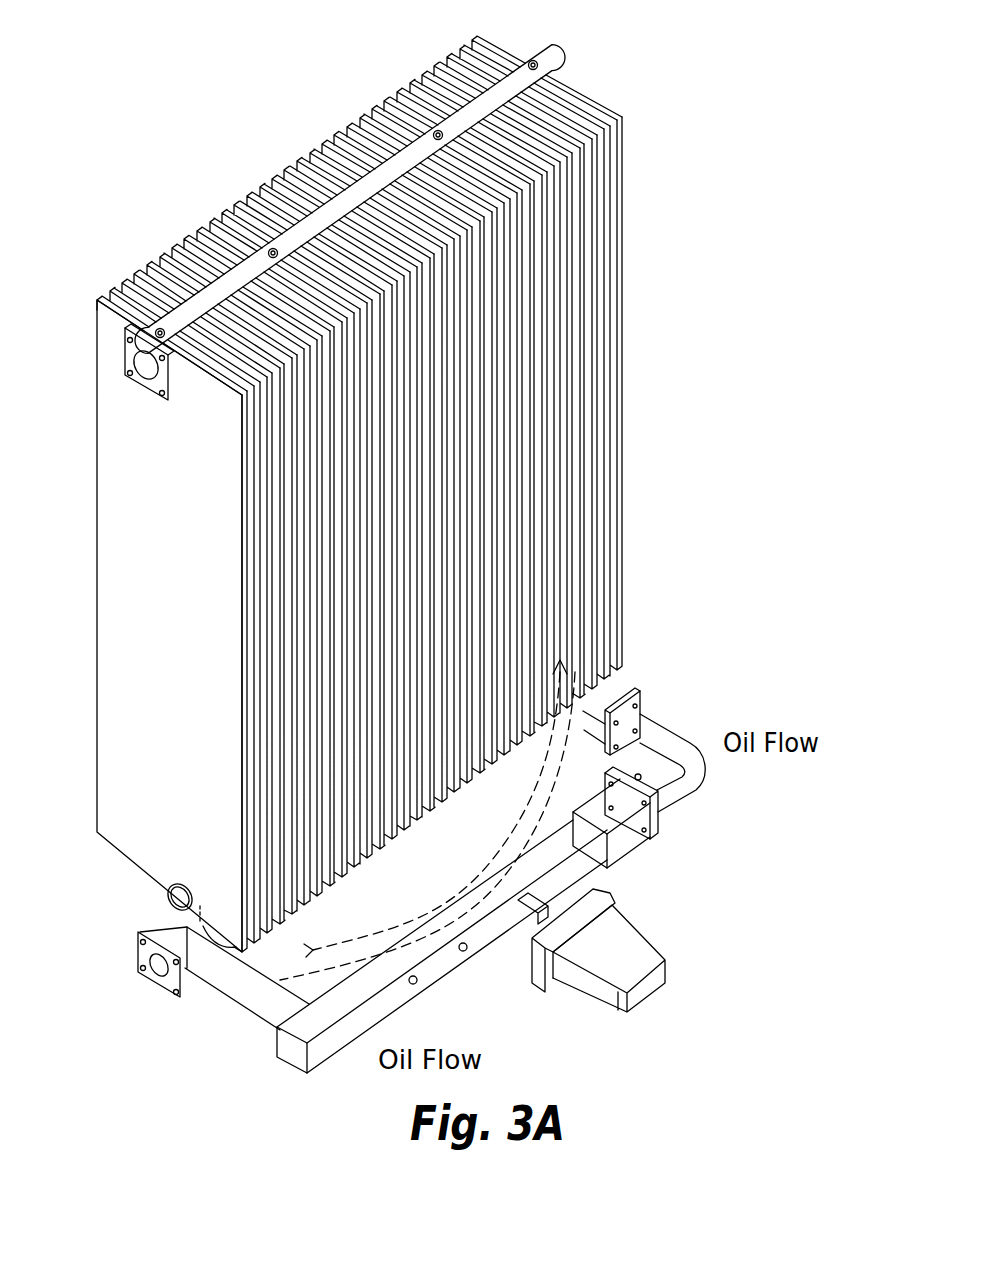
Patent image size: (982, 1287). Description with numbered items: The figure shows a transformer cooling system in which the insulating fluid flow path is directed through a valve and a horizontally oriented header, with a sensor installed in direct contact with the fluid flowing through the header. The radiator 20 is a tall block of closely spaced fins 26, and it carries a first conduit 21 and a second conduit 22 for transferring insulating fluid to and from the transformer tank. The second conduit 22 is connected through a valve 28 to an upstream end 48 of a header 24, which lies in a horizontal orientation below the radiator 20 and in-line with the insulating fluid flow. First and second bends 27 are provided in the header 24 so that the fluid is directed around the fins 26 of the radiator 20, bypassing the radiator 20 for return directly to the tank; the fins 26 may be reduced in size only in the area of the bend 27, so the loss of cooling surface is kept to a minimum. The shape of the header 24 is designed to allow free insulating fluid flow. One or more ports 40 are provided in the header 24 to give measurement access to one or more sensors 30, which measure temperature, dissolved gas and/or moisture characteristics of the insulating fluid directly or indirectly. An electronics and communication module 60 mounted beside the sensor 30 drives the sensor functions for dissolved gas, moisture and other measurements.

The radiator 20 is at (448, 330).
The first conduit 21 is at (128, 372).
The second conduit 22 is at (624, 700).
The header 24 is at (305, 1045).
The fins 26 is at (320, 656).
The bend 27 is at (702, 770).
The valve 28 is at (656, 826).
The sensor 30 is at (627, 943).
The port 40 is at (530, 903).
The upstream end 48 is at (609, 850).
The electronics and communication module 60 is at (643, 990).